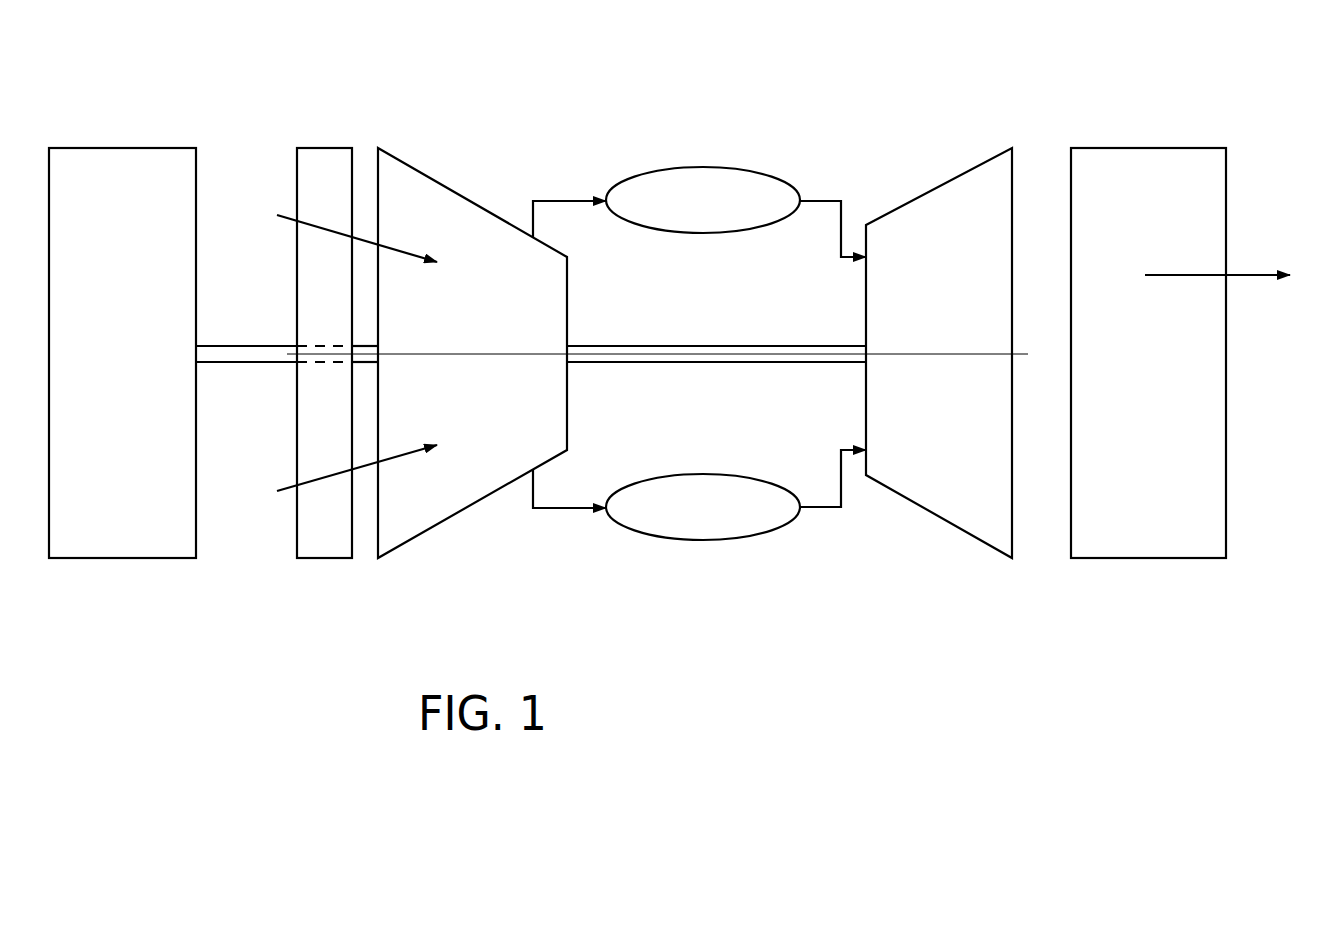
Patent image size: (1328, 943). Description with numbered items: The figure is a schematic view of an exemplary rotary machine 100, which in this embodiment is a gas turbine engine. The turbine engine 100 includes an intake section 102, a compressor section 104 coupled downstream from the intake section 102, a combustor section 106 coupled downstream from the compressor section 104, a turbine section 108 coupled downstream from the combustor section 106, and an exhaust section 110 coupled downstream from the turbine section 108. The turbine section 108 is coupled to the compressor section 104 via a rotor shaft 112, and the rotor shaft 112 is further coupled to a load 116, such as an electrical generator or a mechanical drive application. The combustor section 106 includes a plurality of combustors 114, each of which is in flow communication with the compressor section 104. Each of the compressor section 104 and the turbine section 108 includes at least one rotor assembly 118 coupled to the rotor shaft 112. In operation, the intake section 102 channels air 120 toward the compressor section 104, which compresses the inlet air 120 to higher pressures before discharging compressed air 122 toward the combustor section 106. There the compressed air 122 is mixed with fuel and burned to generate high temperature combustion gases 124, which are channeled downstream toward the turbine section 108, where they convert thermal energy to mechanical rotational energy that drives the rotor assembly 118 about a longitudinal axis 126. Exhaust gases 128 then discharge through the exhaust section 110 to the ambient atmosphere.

The rotary machine 100 is at (848, 77).
The intake section 102 is at (322, 148).
The compressor section 104 is at (400, 162).
The combustor section 106 is at (743, 155).
The turbine section 108 is at (975, 166).
The exhaust section 110 is at (1147, 148).
The rotor shaft 112 is at (698, 362).
The combustor 114 is at (725, 214).
The load 116 is at (123, 148).
The rotor assembly 118 is at (474, 190).
The air 120 is at (290, 214).
The compressed air 122 is at (563, 201).
The combustion gases 124 is at (818, 203).
The longitudinal axis 126 is at (1028, 354).
The exhaust gases 128 is at (1175, 275).